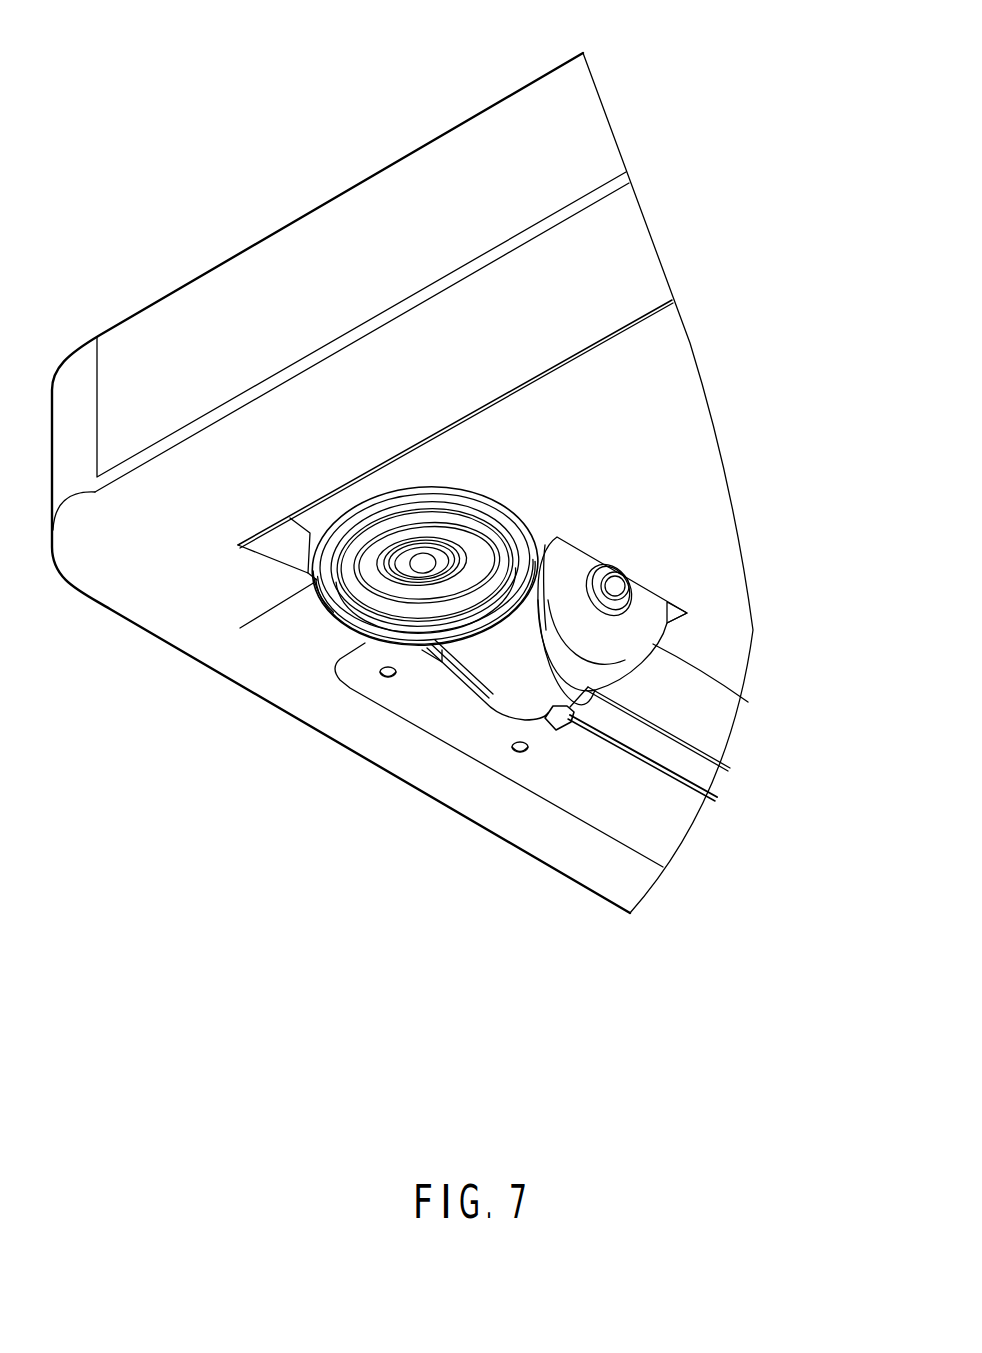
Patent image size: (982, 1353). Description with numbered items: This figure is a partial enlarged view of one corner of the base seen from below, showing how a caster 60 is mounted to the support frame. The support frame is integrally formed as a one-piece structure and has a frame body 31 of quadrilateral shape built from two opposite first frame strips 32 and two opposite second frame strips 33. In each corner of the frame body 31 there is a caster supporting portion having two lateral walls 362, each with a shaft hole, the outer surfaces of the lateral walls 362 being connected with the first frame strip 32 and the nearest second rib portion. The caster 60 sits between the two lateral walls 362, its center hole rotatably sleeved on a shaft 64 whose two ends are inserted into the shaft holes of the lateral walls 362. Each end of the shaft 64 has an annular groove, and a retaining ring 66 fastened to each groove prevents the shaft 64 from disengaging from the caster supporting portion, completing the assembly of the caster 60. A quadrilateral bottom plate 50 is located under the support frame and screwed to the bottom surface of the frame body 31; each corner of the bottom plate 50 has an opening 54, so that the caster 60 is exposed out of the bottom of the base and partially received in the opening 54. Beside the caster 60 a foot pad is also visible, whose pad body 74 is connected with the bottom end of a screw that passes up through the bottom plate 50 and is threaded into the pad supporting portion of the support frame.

The frame body 31 is at (303, 152).
The first frame strip 32 is at (505, 813).
The second frame strip 33 is at (585, 273).
The bottom plate 50 is at (683, 365).
The opening 54 is at (687, 610).
The caster 60 is at (532, 672).
The shaft 64 is at (418, 485).
The retaining ring 66 is at (602, 567).
The pad body 74 is at (328, 590).
The lateral wall 362 is at (462, 680).